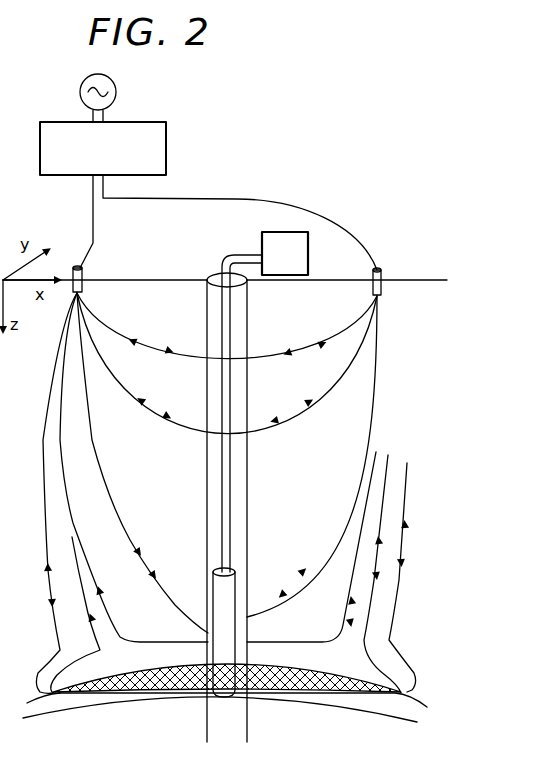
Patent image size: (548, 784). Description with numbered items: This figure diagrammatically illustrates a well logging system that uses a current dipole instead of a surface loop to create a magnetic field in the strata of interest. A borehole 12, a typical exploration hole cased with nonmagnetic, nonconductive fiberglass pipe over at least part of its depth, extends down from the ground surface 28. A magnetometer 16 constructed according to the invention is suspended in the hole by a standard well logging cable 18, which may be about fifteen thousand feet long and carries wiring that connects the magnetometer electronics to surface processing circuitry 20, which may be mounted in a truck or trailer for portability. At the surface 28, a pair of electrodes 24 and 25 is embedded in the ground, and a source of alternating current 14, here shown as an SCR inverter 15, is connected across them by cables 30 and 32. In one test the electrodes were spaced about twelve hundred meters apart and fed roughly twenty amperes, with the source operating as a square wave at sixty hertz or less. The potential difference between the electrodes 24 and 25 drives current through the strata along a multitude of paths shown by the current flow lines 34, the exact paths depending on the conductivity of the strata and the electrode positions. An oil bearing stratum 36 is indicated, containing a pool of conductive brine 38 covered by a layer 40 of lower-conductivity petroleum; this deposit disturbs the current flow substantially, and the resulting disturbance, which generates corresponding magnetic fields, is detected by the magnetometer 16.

The borehole 12 is at (213, 273).
The source of alternating current 14 is at (117, 88).
The SCR inverter 15 is at (166, 132).
The magnetometer 16 is at (234, 597).
The well logging cable 18 is at (231, 477).
The surface processing circuitry 20 is at (262, 240).
The electrode 24 is at (82, 272).
The electrode 25 is at (378, 270).
The surface 28 is at (424, 280).
The cable 30 is at (80, 268).
The cable 32 is at (235, 199).
The current flow lines 34 is at (83, 388).
The oil bearing stratum 36 is at (137, 705).
The pool of conductive brine 38 is at (394, 702).
The layer of petroleum 40 is at (296, 685).